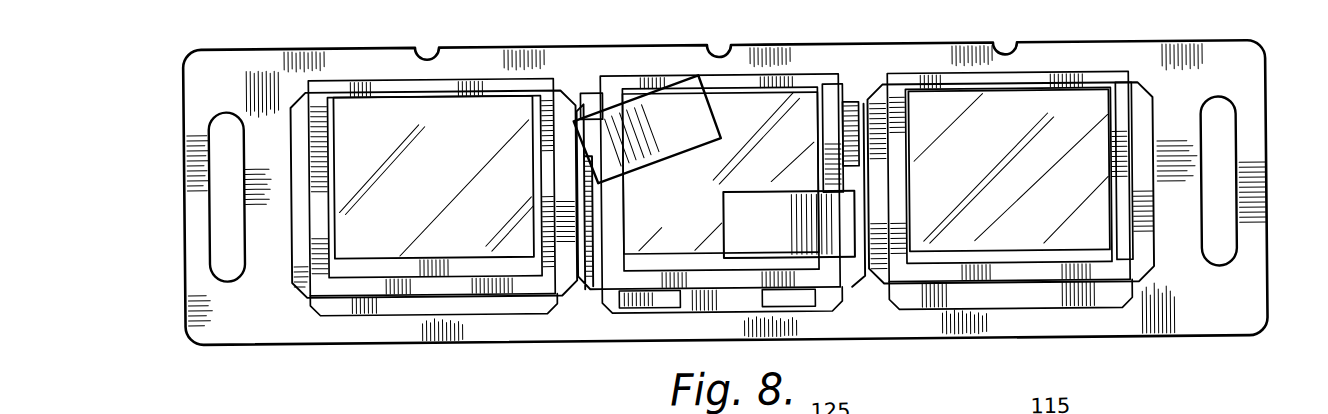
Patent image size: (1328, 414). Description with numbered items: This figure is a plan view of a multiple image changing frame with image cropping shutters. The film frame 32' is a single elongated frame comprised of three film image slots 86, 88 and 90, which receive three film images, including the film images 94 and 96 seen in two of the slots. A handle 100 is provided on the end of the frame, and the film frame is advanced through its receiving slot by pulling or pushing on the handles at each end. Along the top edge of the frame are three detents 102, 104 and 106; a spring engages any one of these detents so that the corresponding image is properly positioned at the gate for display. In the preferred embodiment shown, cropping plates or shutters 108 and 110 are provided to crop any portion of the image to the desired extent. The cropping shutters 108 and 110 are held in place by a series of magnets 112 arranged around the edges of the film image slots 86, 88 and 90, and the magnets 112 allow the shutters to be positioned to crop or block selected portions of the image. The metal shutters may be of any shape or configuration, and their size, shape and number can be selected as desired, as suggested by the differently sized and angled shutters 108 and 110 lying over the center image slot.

The film frame 32' is at (656, 131).
The film image slot 86 is at (316, 112).
The film image slot 88 is at (606, 101).
The film image slot 90 is at (872, 100).
The film image 94 is at (651, 100).
The film image 96 is at (1100, 86).
The handle 100 is at (1252, 146).
The detent 102 is at (370, 83).
The detent 104 is at (731, 78).
The detent 106 is at (1011, 50).
The cropping shutter 108 is at (833, 258).
The cropping shutter 110 is at (598, 298).
The magnets 112 is at (577, 97).